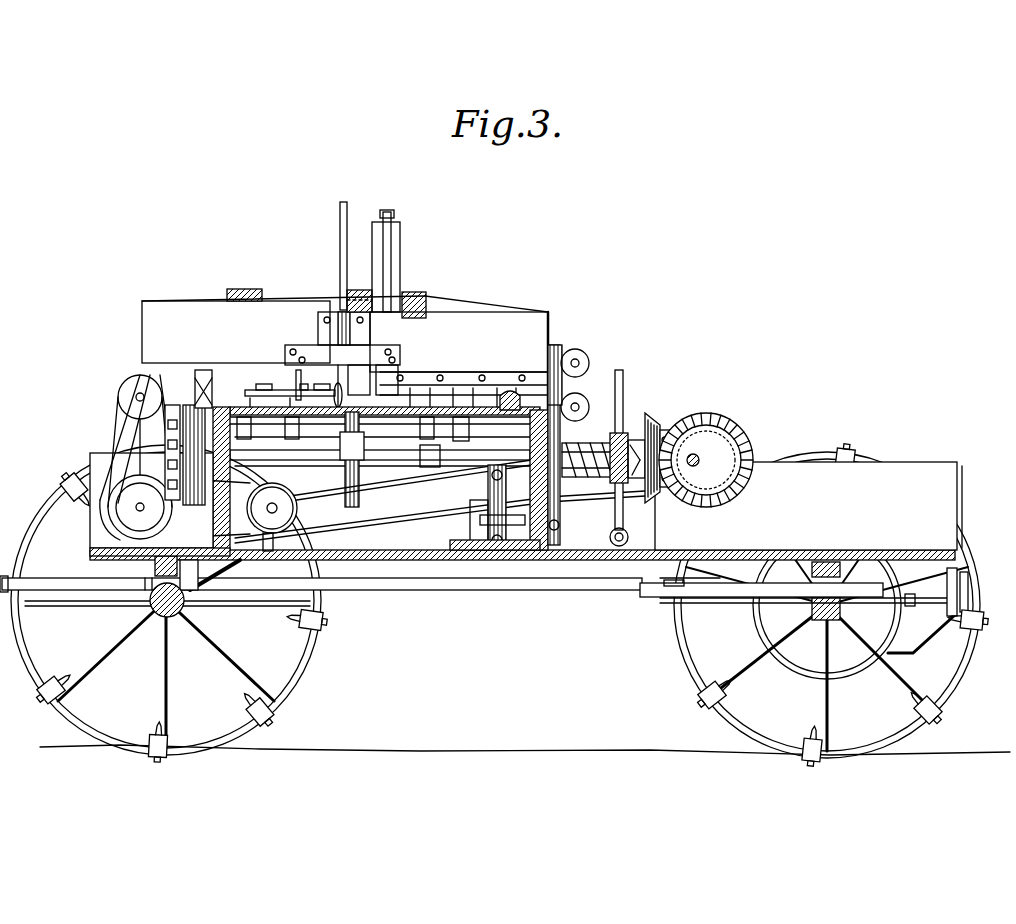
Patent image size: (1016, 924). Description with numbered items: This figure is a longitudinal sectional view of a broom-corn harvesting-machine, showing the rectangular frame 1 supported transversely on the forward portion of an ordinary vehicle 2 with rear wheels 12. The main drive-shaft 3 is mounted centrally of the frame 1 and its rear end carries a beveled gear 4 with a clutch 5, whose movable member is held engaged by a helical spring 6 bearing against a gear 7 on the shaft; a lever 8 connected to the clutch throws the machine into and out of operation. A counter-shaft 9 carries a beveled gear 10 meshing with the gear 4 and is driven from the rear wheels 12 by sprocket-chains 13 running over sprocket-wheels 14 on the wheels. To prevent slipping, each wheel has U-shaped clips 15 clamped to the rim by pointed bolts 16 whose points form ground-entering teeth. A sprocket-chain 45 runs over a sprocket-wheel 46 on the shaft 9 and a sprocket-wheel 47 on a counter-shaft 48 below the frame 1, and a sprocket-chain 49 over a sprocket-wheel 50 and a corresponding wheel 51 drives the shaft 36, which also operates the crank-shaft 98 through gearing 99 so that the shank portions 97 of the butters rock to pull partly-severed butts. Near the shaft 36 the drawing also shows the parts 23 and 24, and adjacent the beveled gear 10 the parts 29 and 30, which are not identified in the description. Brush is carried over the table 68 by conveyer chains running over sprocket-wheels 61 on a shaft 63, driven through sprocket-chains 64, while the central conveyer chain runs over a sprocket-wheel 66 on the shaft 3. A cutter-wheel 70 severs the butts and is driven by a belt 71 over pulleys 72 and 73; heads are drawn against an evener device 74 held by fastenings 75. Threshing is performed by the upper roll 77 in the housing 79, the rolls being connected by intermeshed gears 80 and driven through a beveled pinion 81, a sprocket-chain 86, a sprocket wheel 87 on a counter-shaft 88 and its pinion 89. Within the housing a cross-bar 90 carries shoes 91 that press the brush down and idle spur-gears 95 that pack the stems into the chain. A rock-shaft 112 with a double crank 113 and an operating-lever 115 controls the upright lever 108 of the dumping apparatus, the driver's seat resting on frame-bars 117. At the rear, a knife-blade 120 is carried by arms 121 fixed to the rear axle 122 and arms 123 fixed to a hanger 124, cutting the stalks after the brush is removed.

The rectangular frame 1 is at (528, 562).
The vehicle 2 is at (808, 506).
The main drive-shaft 3 is at (400, 462).
The beveled gear 4 is at (655, 503).
The clutch 5 is at (636, 478).
The helical spring 6 is at (585, 477).
The gear 7 is at (530, 478).
The lever 8 is at (624, 400).
The counter-shaft 9 is at (697, 455).
The beveled gear 10 is at (716, 421).
The rear wheels 12 is at (300, 650).
The sprocket-chains 13 is at (762, 640).
The sprocket-wheels 14 is at (810, 608).
The U-shaped clips 15 is at (62, 494).
The pointed bolts 16 is at (60, 472).
The sprocket 23 is at (195, 502).
The belt 24 is at (160, 430).
The pawl 29 is at (668, 430).
The pawl carrier 30 is at (676, 430).
The shaft 36 is at (135, 510).
The sprocket-chain 45 is at (405, 520).
The sprocket-wheel 46 is at (742, 436).
The sprocket-wheel 47 is at (318, 504).
The counter-shaft 48 is at (278, 506).
The sprocket-chain 49 is at (266, 551).
The sprocket-wheel 50 is at (285, 515).
The sprocket-wheel 51 is at (160, 558).
The sprocket-wheels 61 is at (252, 433).
The shaft 63 is at (472, 428).
The sprocket-chains 64 is at (430, 468).
The sprocket-wheel 66 is at (355, 470).
The table 68 is at (385, 401).
The cutter-wheel 70 is at (297, 385).
The belt 71 is at (203, 400).
The pulley 72 is at (188, 405).
The pulley 73 is at (230, 468).
The evener device 74 is at (502, 372).
The fastenings 75 is at (517, 397).
The upper roll 77 is at (462, 372).
The housing 79 is at (459, 361).
The intermeshed gears 80 is at (580, 355).
The beveled pinion 81 is at (558, 345).
The sprocket-chain 86 is at (496, 507).
The sprocket wheel 87 is at (490, 560).
The counter-shaft 88 is at (498, 525).
The pinion 89 is at (560, 530).
The cross-bar 90 is at (372, 371).
The shoe 91 is at (339, 387).
The idle spur-gears 95 is at (386, 345).
The shank portions 97 is at (270, 390).
The crank-shaft 98 is at (136, 397).
The gearing 99 is at (140, 452).
The upright lever 108 is at (391, 246).
The rock-shaft 112 is at (358, 283).
The double crank 113 is at (394, 222).
The operating-lever 115 is at (340, 225).
The frame-bars 117 is at (244, 292).
The knife-blade 120 is at (892, 672).
The arm or bracket 121 is at (862, 606).
The rear axle 122 is at (513, 618).
The arm 123 is at (925, 648).
The bracket or hanger 124 is at (965, 575).